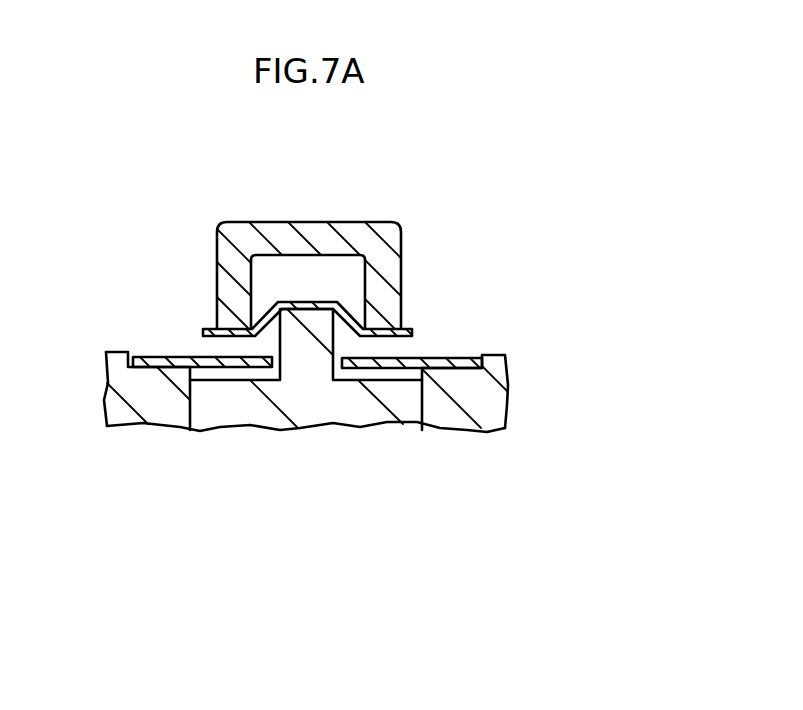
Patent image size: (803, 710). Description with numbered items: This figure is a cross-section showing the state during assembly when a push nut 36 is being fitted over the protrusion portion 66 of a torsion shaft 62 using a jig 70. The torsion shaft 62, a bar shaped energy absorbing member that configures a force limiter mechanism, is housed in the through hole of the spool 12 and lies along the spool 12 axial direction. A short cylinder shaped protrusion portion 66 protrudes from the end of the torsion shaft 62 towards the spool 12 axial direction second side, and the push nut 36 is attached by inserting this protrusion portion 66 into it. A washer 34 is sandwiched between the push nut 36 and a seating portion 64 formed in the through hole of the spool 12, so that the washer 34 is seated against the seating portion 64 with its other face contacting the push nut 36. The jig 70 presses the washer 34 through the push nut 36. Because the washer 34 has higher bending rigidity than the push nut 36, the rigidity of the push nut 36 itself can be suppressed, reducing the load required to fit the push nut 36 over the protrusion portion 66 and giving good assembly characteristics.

The spool 12 is at (510, 340).
The washer 34 is at (438, 334).
The push nut 36 is at (412, 322).
The torsion shaft 62 is at (426, 412).
The seating portion 64 is at (170, 355).
The protrusion portion 66 is at (421, 352).
The jig 70 is at (297, 222).